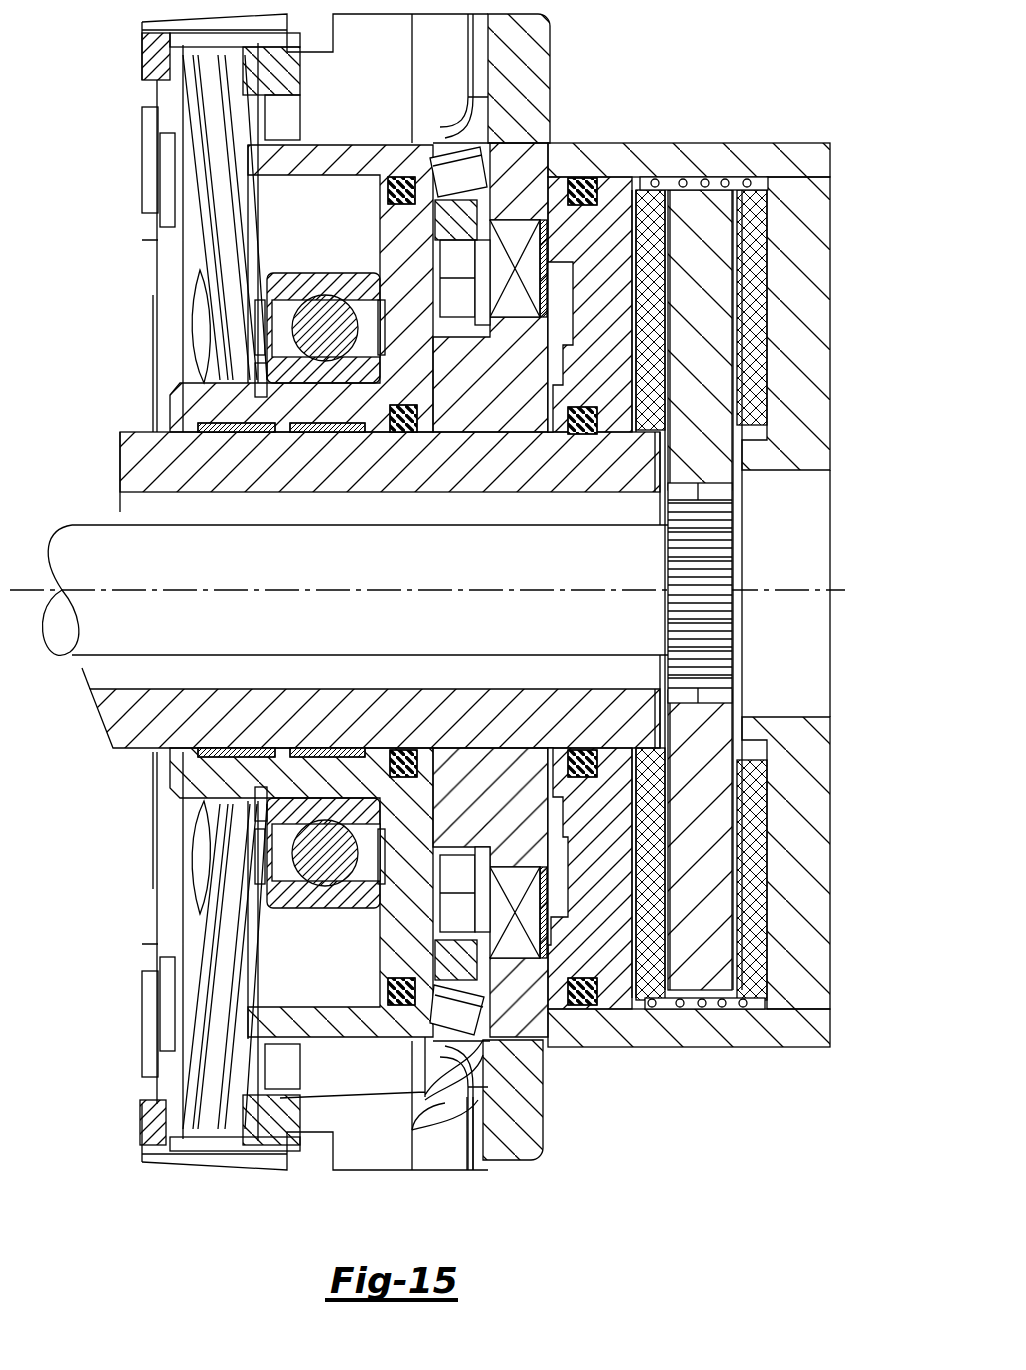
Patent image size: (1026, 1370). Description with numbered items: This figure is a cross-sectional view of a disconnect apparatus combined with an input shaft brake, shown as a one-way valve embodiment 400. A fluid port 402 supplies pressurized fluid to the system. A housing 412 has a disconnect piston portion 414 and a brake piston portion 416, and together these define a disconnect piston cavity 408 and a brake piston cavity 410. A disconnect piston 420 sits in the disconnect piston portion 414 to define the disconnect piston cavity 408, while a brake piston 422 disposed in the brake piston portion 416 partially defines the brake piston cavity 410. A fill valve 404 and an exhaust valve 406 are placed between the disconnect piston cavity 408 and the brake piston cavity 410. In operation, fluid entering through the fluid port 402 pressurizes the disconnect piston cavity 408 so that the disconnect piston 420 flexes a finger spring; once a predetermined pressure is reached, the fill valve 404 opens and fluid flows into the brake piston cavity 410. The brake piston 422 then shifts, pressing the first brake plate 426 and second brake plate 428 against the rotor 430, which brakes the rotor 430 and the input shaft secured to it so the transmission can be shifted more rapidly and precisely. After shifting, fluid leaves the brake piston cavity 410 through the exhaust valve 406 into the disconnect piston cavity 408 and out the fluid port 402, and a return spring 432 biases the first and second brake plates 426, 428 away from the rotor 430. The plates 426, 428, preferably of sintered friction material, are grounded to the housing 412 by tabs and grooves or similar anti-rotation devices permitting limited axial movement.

The one-way valve embodiment 400 is at (690, 88).
The fluid port 402 is at (453, 165).
The fill valve 404 is at (518, 233).
The exhaust valve 406 is at (525, 950).
The disconnect piston cavity 408 is at (440, 945).
The brake piston cavity 410 is at (555, 288).
The housing 412 is at (838, 960).
The disconnect piston portion 414 is at (517, 152).
The brake piston portion 416 is at (688, 1033).
The disconnect piston 420 is at (398, 240).
The brake piston 422 is at (612, 233).
The first brake plate 426 is at (650, 257).
The second brake plate 428 is at (756, 377).
The rotor 430 is at (703, 811).
The return spring 432 is at (725, 180).